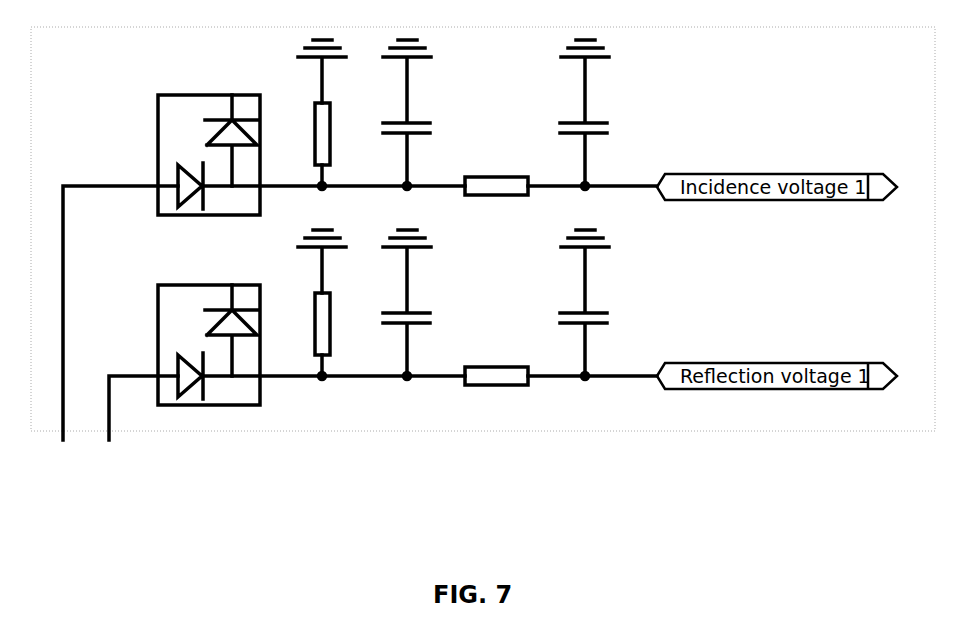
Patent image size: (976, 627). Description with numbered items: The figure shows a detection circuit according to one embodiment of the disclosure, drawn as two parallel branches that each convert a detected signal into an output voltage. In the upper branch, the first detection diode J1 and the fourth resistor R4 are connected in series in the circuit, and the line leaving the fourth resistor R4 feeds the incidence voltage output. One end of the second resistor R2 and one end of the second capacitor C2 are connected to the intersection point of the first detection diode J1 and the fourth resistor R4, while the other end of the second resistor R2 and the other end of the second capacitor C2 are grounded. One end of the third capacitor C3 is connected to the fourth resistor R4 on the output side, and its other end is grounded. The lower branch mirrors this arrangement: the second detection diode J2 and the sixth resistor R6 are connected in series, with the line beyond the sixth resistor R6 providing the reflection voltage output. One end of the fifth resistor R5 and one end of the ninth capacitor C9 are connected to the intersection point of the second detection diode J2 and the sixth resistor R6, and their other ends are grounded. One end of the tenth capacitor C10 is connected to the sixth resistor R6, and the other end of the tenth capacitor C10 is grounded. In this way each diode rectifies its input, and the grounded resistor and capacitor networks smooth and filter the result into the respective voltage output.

The first detection diode J1 is at (188, 155).
The second detection diode J2 is at (188, 345).
The second resistor R2 is at (327, 115).
The second capacitor C2 is at (421, 115).
The fourth resistor R4 is at (496, 174).
The third capacitor C3 is at (606, 115).
The fifth resistor R5 is at (327, 305).
The ninth capacitor C9 is at (421, 305).
The sixth resistor R6 is at (496, 364).
The tenth capacitor C10 is at (610, 305).